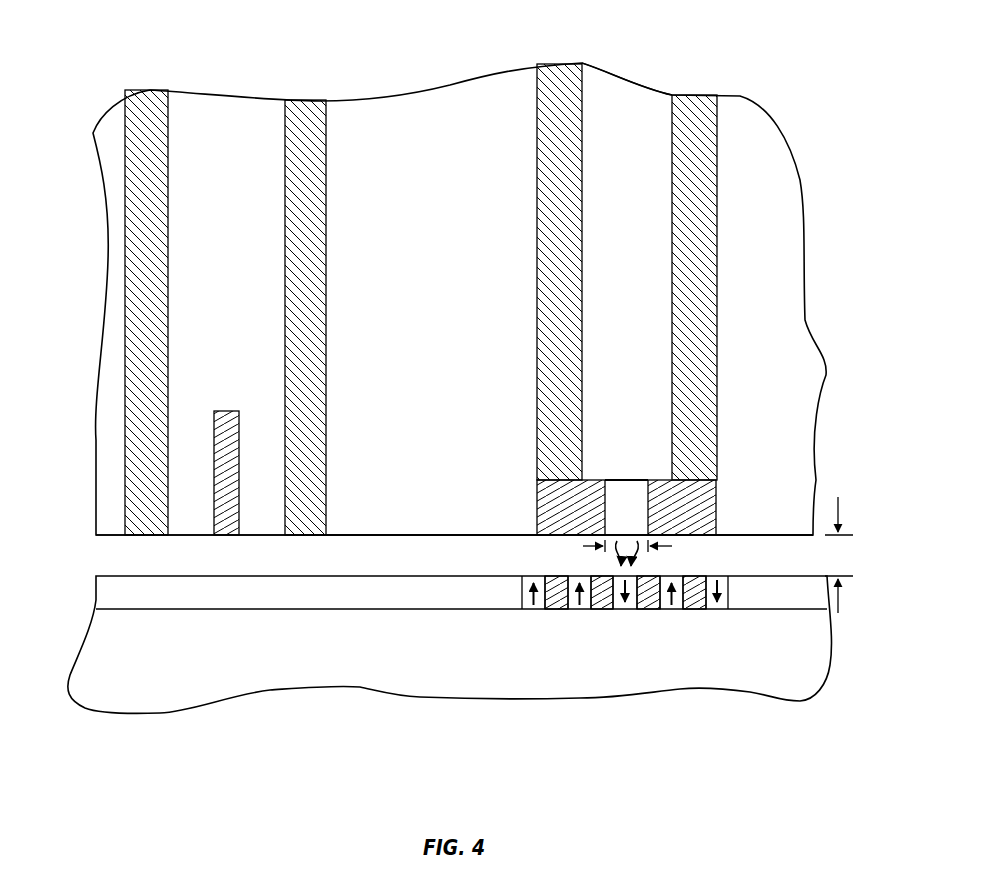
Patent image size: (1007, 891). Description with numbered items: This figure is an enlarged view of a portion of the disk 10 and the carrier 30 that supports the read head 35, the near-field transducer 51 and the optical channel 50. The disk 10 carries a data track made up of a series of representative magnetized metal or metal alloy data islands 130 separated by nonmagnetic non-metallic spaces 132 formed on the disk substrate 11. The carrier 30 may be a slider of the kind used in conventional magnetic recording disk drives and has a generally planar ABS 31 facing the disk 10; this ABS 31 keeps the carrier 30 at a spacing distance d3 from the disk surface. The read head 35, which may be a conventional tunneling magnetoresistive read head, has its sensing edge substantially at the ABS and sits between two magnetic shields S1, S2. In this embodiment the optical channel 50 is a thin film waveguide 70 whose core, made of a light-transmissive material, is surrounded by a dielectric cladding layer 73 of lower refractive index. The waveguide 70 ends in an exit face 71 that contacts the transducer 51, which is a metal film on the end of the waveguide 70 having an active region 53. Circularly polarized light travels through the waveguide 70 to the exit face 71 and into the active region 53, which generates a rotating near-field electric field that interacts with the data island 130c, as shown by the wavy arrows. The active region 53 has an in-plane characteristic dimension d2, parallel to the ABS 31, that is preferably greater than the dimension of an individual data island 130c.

The carrier 30 is at (787, 62).
The optical channel 50 is at (712, 53).
The thin film waveguide 70 is at (618, 84).
The dielectric cladding layer 73 is at (548, 417).
The exit face 71 is at (645, 480).
The active region 53 is at (617, 506).
The near-field transducer 51 is at (708, 508).
The magnetic shield S1 is at (128, 235).
The magnetic shield S2 is at (321, 175).
The read head 35 is at (225, 412).
The ABS 31 is at (185, 538).
The air bearing surface ABS is at (432, 538).
The characteristic dimension of active region d2 is at (642, 553).
The spacing distance d3 is at (839, 555).
The disk 10 is at (467, 655).
The disk substrate 11 is at (810, 682).
The data islands 130 is at (577, 575).
The nonmagnetic non-metallic spaces 132 is at (598, 610).
The data island 130c is at (622, 611).